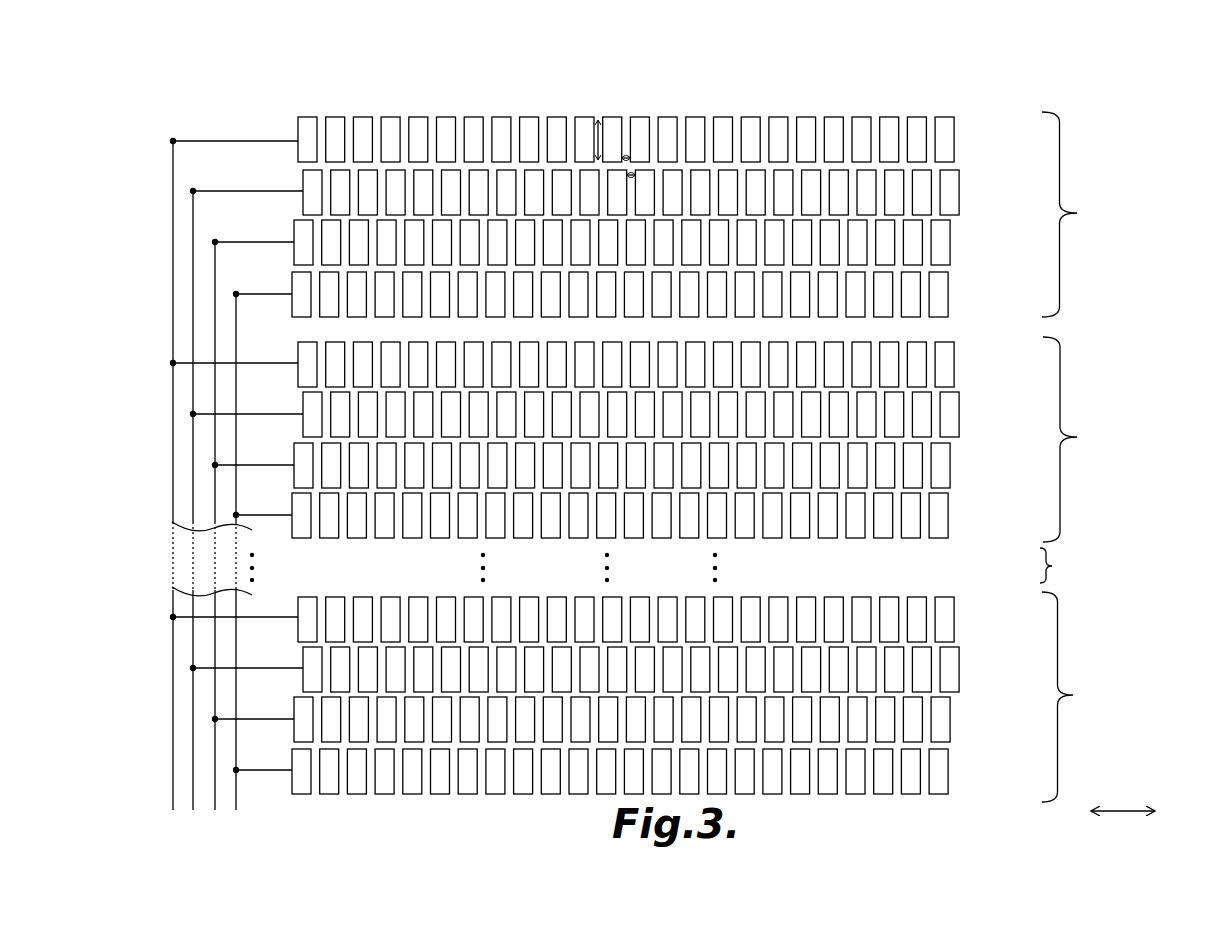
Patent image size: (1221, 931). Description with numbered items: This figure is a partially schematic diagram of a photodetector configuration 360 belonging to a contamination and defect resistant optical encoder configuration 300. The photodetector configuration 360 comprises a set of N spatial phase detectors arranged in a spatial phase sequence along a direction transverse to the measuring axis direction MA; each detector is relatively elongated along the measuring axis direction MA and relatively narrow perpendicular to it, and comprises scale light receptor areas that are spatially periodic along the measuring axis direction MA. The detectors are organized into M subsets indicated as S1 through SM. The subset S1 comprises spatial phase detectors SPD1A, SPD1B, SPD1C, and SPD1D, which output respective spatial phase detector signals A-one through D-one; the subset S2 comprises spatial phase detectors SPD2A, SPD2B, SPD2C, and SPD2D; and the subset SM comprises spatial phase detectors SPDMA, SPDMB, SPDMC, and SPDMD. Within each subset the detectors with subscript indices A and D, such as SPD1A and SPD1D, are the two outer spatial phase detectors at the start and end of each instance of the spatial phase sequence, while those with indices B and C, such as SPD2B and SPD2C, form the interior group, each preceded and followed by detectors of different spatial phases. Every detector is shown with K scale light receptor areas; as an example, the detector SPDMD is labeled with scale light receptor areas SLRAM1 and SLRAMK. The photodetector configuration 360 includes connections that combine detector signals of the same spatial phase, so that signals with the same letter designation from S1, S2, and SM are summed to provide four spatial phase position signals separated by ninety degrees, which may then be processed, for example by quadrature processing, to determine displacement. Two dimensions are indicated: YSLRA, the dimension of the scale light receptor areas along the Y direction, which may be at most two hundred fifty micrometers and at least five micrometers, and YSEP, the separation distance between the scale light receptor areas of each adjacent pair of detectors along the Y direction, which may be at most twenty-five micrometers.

The contamination and defect resistant optical encoder configuration 300 is at (1112, 62).
The photodetector configuration 360 is at (975, 106).
The spatial phase detector SPD1A is at (957, 136).
The spatial phase detector SPD1B is at (957, 189).
The spatial phase detector SPD1C is at (957, 239).
The spatial phase detector SPD1D is at (957, 291).
The spatial phase detector SPD2A is at (957, 361).
The spatial phase detector SPD2B is at (957, 411).
The spatial phase detector SPD2C is at (957, 462).
The spatial phase detector SPD2D is at (957, 512).
The spatial phase detector SPDMA is at (957, 616).
The spatial phase detector SPDMB is at (957, 666).
The spatial phase detector SPDMC is at (957, 716).
The spatial phase detector SPDMD is at (957, 768).
The dimension of the scale light receptor areas along the Y direction YSLRA is at (593, 142).
The separation distance YSEP is at (627, 152).
The scale light receptor area SLRAM1 is at (297, 795).
The scale light receptor area SLRAMK is at (933, 793).
The subset of spatial phase detectors S1 is at (1071, 214).
The subset of spatial phase detectors S2 is at (1072, 439).
The subset of spatial phase detectors SM is at (1072, 697).
The measuring axis direction MA is at (1123, 794).